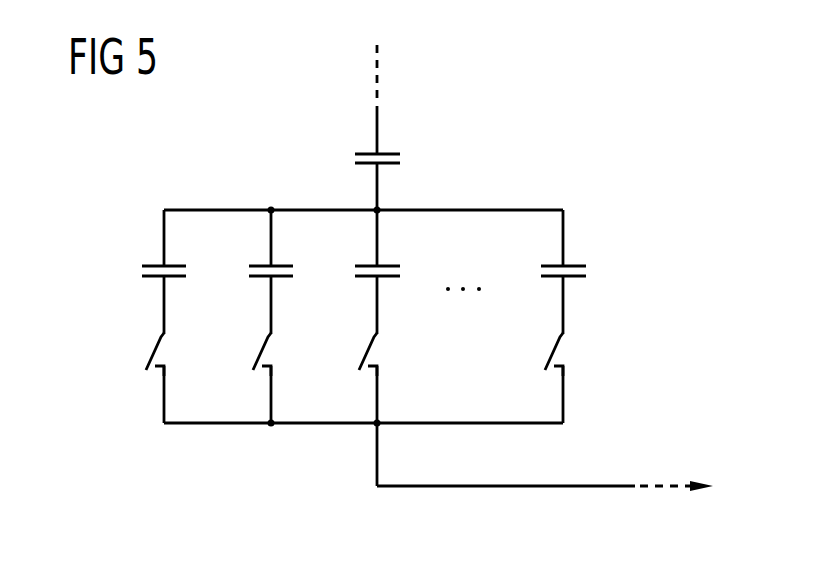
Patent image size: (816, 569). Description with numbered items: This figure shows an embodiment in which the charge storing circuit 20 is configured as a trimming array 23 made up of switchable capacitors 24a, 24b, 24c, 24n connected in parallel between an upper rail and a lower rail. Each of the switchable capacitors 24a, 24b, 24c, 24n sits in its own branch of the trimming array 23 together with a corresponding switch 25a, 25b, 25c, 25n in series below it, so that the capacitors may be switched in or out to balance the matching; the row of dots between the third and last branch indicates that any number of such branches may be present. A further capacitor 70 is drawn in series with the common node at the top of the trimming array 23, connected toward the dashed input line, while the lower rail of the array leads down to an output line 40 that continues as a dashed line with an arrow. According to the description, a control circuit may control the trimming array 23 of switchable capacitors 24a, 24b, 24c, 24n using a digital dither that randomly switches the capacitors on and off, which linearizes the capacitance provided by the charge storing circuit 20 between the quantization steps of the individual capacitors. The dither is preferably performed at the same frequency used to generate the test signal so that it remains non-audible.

The charge storing circuit 20 is at (397, 268).
The trimming array 23 is at (397, 268).
The switchable capacitor 24a is at (142, 270).
The switchable capacitor 24b is at (249, 270).
The switchable capacitor 24c is at (356, 270).
The switchable capacitor 24n is at (541, 270).
The switch 25a is at (151, 350).
The switch 25b is at (258, 350).
The switch 25c is at (365, 350).
The switch 25n is at (550, 350).
The output line 40 is at (704, 483).
The capacitor 70 is at (402, 160).